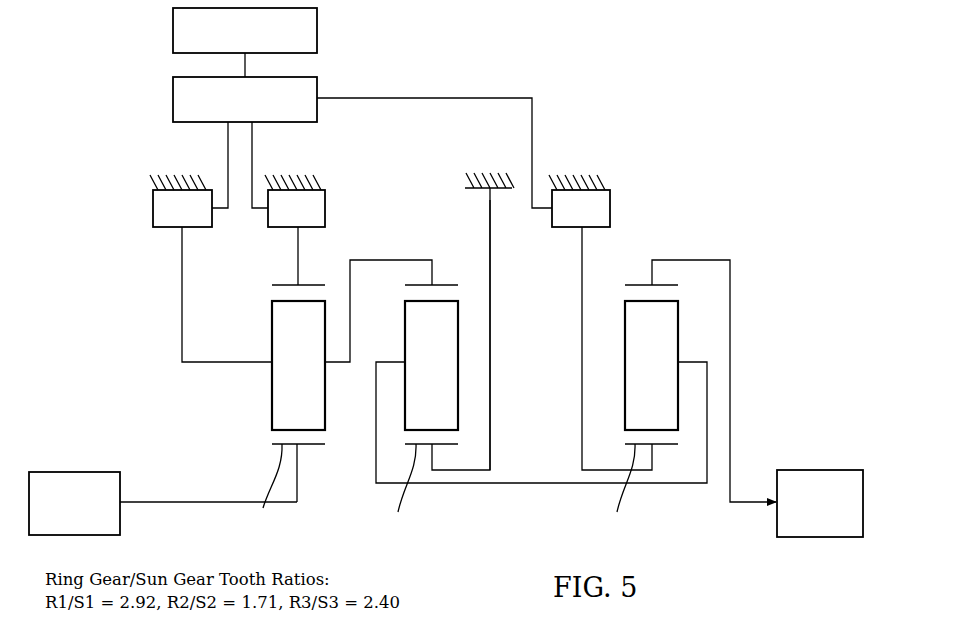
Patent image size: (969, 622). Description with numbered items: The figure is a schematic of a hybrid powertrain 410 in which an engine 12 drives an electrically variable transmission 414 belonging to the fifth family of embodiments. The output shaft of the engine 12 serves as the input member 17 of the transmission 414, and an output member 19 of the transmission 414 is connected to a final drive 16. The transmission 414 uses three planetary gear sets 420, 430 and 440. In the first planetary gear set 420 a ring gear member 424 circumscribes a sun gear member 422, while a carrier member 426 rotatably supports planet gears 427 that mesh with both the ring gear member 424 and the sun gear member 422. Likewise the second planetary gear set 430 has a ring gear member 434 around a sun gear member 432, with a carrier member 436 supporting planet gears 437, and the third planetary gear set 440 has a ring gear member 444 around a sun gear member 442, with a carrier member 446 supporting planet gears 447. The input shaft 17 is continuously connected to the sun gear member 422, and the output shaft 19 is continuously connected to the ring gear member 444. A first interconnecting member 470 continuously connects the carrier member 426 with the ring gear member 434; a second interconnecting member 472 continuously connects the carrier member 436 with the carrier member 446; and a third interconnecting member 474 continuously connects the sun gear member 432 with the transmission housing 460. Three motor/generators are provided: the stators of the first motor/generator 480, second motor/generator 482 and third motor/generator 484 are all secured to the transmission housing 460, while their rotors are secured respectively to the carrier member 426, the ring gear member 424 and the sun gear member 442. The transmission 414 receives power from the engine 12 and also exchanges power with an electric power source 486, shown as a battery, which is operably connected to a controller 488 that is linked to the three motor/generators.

The powertrain 410 is at (662, 72).
The electrically variable transmission 414 is at (702, 112).
The engine 12 is at (88, 461).
The final drive 16 is at (793, 450).
The input member 17 is at (143, 505).
The output member 19 is at (752, 505).
The first planetary gear set 420 is at (287, 388).
The sun gear member 422 is at (264, 492).
The ring gear member 424 is at (285, 284).
The carrier member 426 is at (267, 370).
The planet gears 427 is at (298, 365).
The second planetary gear set 430 is at (420, 379).
The sun gear member 432 is at (399, 492).
The ring gear member 434 is at (418, 285).
The carrier member 436 is at (394, 352).
The planet gears 437 is at (431, 365).
The third planetary gear set 440 is at (660, 379).
The sun gear member 442 is at (618, 492).
The ring gear member 444 is at (660, 285).
The carrier member 446 is at (689, 355).
The planet gears 447 is at (651, 365).
The transmission housing 460 is at (188, 174).
The first interconnecting member 470 is at (382, 260).
The second interconnecting member 472 is at (538, 487).
The third interconnecting member 474 is at (492, 390).
The first motor/generator 480 is at (150, 188).
The second motor/generator 482 is at (340, 193).
The third motor/generator 484 is at (622, 192).
The electric power source 486 is at (173, 31).
The controller 488 is at (173, 98).